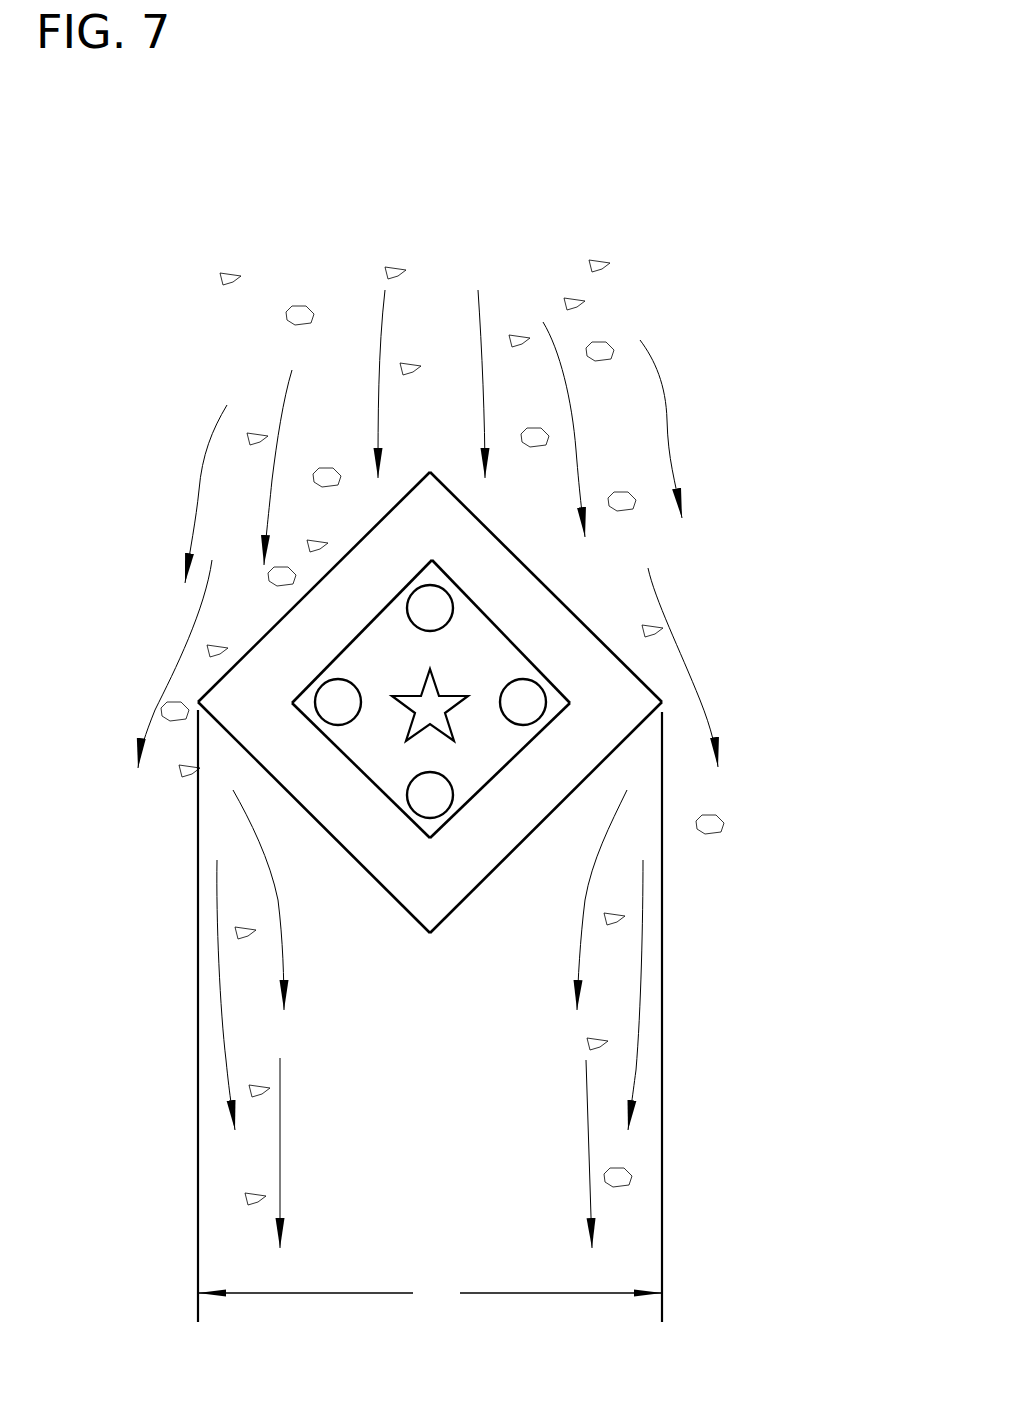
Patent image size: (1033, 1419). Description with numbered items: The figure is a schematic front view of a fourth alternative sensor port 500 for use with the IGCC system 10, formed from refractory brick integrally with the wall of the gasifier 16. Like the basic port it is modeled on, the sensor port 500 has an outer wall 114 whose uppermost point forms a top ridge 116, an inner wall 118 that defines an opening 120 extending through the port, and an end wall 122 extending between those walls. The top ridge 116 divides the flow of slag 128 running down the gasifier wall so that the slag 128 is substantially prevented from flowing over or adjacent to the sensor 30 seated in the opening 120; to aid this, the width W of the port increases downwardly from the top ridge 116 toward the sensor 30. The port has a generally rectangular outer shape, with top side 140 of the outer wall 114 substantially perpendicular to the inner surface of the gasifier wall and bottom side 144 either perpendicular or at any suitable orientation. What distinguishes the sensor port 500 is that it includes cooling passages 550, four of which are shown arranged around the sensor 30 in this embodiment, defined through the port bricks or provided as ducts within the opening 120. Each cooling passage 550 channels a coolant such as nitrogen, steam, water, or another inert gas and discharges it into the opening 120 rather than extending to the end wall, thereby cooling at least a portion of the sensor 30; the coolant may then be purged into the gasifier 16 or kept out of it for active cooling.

The IGCC system 10 is at (678, 163).
The gasifier 16 is at (668, 235).
The sensor 30 is at (437, 683).
The outer wall 114 is at (442, 922).
The top ridge 116 is at (430, 472).
The inner wall 118 is at (370, 778).
The opening 120 is at (416, 668).
The end wall 122 is at (526, 828).
The slag 128 is at (347, 362).
The top side 140 is at (370, 533).
The bottom side 144 is at (513, 851).
The sensor port 500 is at (697, 660).
The cooling passage 550 is at (532, 703).